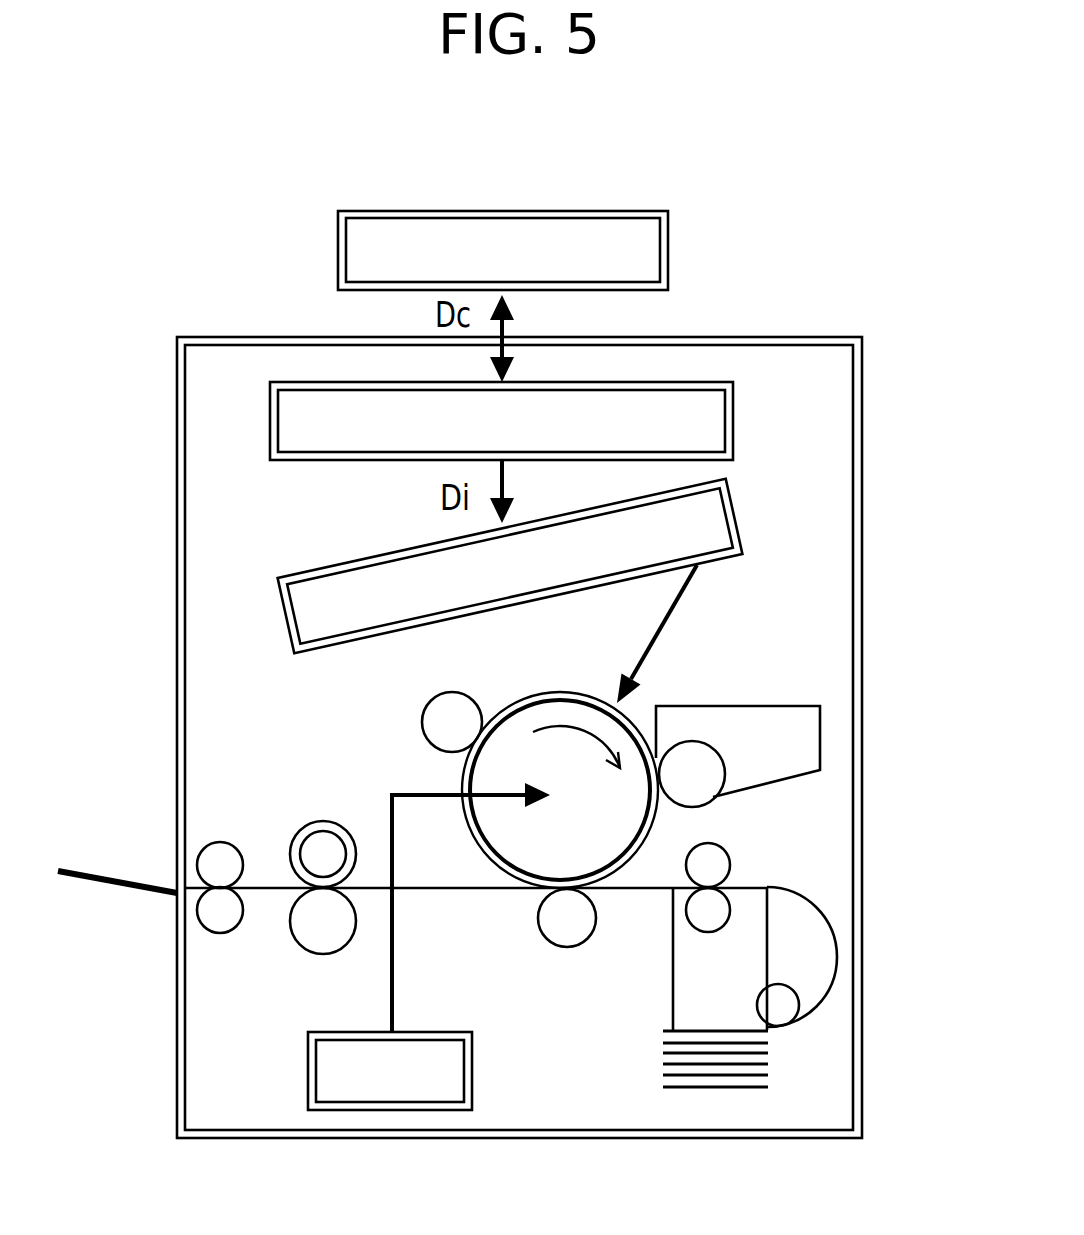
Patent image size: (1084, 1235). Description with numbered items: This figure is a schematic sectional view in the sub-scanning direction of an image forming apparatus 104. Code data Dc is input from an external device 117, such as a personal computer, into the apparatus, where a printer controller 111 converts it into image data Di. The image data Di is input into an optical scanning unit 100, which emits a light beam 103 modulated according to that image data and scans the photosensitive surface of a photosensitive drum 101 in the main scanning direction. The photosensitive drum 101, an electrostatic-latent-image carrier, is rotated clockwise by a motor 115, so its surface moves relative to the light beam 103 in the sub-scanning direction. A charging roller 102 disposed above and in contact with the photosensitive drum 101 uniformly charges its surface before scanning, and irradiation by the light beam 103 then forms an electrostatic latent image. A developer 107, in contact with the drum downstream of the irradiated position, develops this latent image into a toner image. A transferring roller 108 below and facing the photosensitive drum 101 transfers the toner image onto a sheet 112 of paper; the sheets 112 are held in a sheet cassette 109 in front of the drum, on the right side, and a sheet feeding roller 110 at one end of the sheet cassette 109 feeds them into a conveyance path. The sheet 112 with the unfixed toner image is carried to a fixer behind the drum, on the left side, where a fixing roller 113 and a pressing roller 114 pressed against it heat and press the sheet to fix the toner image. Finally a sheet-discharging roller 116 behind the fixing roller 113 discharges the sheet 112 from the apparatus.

The optical scanning unit 100 is at (326, 563).
The photosensitive drum 101 is at (650, 838).
The charging roller 102 is at (422, 722).
The light beam 103 is at (667, 623).
The image forming apparatus 104 is at (845, 333).
The developer 107 is at (820, 737).
The transferring roller 108 is at (548, 945).
The sheet cassette 109 is at (660, 1066).
The sheet feeding roller 110 is at (757, 1000).
The printer controller 111 is at (733, 428).
The sheet 112 is at (505, 890).
The fixing roller 113 is at (290, 845).
The pressing roller 114 is at (297, 944).
The motor 115 is at (472, 1090).
The sheet-discharging roller 116 is at (197, 858).
The external device 117 is at (668, 245).